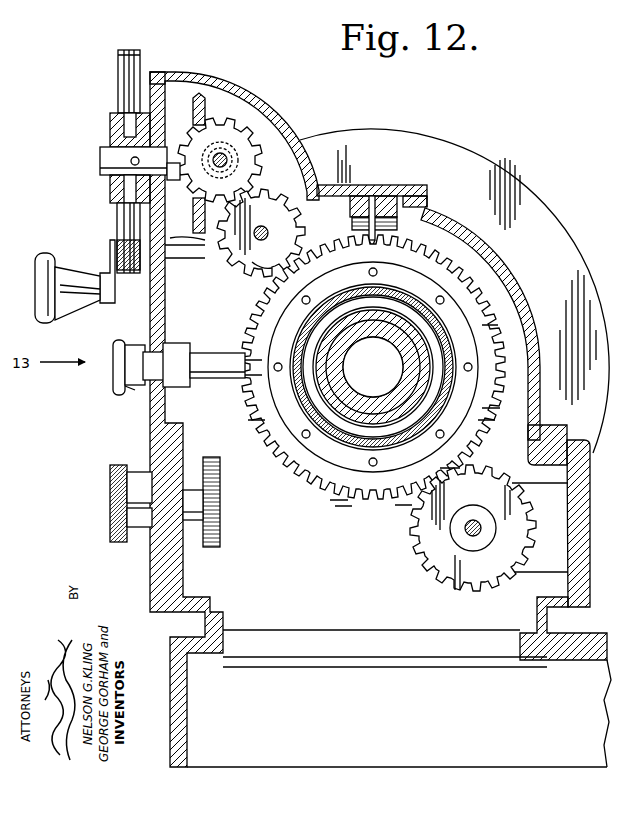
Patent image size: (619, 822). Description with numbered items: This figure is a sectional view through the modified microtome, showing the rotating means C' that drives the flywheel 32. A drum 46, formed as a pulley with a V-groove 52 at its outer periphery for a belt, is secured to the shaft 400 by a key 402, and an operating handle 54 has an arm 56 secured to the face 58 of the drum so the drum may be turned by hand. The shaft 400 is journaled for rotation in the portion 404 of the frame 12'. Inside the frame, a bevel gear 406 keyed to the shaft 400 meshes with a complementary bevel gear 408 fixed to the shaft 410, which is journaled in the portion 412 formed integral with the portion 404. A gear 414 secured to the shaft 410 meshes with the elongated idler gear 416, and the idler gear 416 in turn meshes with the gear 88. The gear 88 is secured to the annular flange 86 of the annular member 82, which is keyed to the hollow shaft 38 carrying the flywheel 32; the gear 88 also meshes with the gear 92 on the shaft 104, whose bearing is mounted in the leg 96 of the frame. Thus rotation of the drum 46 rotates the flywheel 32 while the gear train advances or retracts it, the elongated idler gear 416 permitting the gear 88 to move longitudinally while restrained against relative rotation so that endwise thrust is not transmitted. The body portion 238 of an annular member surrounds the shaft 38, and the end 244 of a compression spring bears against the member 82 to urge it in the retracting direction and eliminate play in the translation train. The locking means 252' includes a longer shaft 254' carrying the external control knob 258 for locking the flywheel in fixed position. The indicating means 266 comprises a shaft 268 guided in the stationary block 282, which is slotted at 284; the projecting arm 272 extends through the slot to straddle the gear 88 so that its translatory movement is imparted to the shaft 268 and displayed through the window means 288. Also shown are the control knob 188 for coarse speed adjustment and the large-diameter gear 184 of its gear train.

The frame 12' is at (363, 419).
The rotating means C' is at (234, 110).
The flywheel 32 is at (495, 175).
The leg 96 is at (547, 492).
The indicating means 266 is at (402, 184).
The window means 288 is at (374, 186).
The projecting arm 272 is at (398, 238).
The shaft 268 is at (368, 194).
The stationary block 282 is at (342, 182).
The slot 284 is at (432, 206).
The bevel gear 406 is at (203, 93).
The shaft 410 is at (233, 160).
The bevel gear 408 is at (243, 125).
The gear 414 is at (261, 233).
The idler gear 416 is at (252, 262).
The portion 412 is at (190, 258).
The gear 88 is at (351, 493).
The annular member 82 is at (403, 295).
The annular flange 86 is at (430, 292).
The end of compression spring 244 is at (356, 300).
The body portion 238 is at (380, 333).
The hollow shaft 38 is at (380, 402).
The gear 92 is at (418, 543).
The shaft 104 is at (470, 534).
The V-groove 52 is at (128, 50).
The drum 46 is at (118, 72).
The shaft 400 is at (102, 157).
The key 402 is at (100, 165).
The face 58 is at (112, 205).
The portion 404 is at (117, 212).
The arm 56 is at (110, 258).
The operating handle 54 is at (42, 255).
The control knob 258 is at (115, 352).
The shaft 254' is at (204, 350).
The locking means 252' is at (103, 405).
The control knob 188 is at (120, 465).
The gear 184 is at (214, 506).